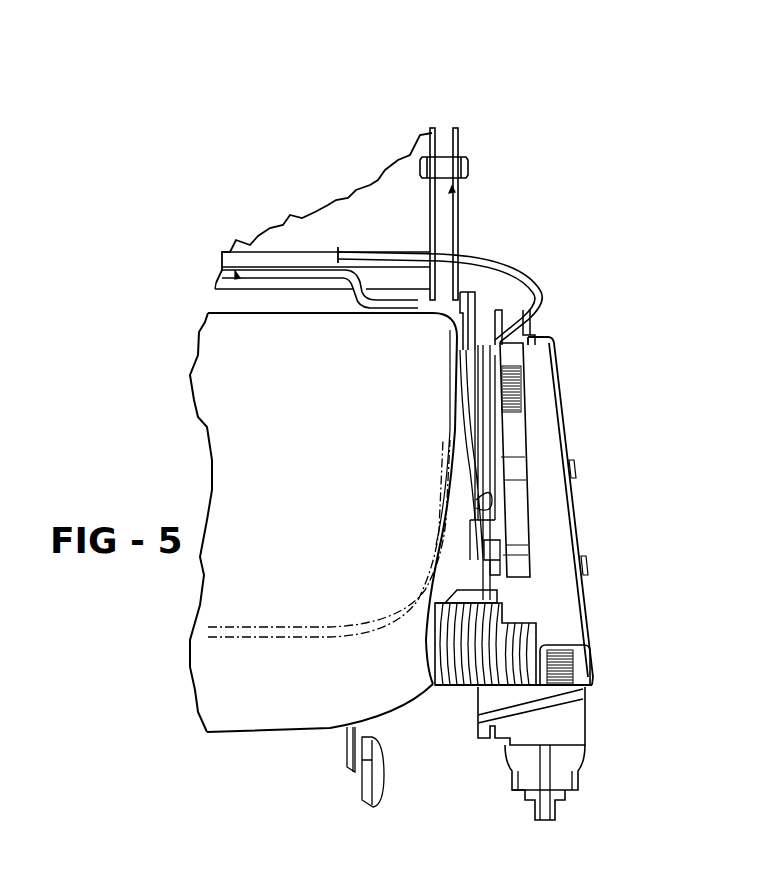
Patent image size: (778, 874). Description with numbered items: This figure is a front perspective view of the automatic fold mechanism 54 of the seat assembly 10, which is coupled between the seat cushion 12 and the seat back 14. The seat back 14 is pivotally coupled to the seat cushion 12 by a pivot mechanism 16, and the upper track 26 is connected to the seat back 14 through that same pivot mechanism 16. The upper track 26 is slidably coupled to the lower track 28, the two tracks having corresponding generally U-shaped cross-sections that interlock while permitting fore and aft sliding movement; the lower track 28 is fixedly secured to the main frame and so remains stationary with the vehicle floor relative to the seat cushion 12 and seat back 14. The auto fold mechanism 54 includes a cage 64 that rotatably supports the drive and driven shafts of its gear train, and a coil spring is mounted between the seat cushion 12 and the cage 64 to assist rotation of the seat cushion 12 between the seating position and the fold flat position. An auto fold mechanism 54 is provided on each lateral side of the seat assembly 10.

The seat assembly 10 is at (154, 239).
The seat cushion 12 is at (208, 372).
The seat back 14 is at (385, 185).
The pivot mechanism 16 is at (463, 138).
The upper track 26 is at (585, 718).
The lower track 28 is at (558, 817).
The automatic fold mechanism 54 is at (632, 417).
The cage 64 is at (566, 527).